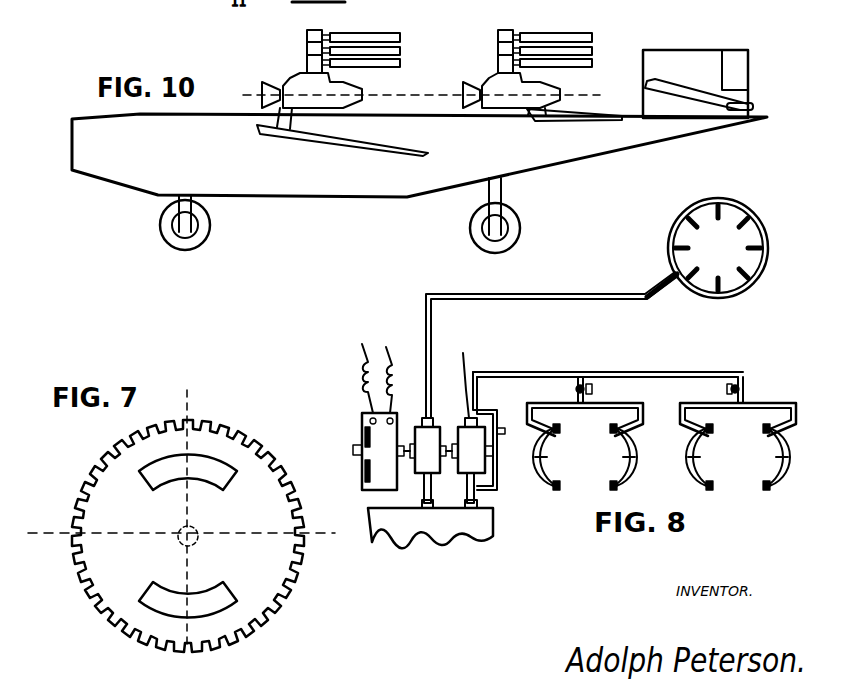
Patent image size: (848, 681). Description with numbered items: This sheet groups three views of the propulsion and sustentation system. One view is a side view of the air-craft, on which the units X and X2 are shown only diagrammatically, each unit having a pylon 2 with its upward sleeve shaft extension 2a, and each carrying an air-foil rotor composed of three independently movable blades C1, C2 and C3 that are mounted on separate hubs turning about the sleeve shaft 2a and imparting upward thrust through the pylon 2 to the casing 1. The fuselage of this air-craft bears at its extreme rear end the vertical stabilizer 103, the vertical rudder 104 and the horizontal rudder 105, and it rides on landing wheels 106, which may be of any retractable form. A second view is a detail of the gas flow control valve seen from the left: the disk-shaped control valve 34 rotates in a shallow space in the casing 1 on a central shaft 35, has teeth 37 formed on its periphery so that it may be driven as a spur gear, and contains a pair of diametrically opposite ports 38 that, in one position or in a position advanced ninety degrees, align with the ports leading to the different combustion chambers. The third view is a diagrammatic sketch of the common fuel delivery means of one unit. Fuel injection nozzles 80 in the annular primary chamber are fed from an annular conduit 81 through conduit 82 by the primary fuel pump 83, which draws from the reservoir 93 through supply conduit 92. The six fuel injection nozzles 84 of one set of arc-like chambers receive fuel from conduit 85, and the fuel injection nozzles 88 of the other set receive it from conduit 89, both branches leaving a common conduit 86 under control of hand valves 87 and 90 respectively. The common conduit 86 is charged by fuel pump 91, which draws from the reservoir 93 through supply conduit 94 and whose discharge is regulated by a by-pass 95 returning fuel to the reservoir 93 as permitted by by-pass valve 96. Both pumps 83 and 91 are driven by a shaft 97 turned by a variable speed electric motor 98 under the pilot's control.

In FIG. 7, the casing 1 is at (190, 388).
In FIG. 10, the pylon 2 is at (235, 92).
In FIG. 7, the pylon 2 is at (33, 526).
In FIG. 10, the sleeve shaft 2a is at (521, 94).
In FIG. 10, the propulsion and sustentation unit X is at (297, 73).
In FIG. 10, the propulsion and sustentation unit X2 is at (487, 78).
In FIG. 10, the blade C1 is at (400, 35).
In FIG. 10, the blade C2 is at (400, 50).
In FIG. 10, the blade C3 is at (400, 62).
In FIG. 7, the control valve 34 is at (110, 490).
In FIG. 7, the shaft 35 is at (196, 541).
In FIG. 7, the teeth 37 is at (75, 558).
In FIG. 7, the ports 38 is at (188, 535).
In FIG. 8, the fuel injection nozzles 80 is at (716, 221).
In FIG. 8, the annular conduit 81 is at (768, 231).
In FIG. 8, the conduit 82 is at (541, 300).
In FIG. 8, the primary fuel pump 83 is at (428, 443).
In FIG. 8, the fuel injection nozzles 84 is at (763, 436).
In FIG. 8, the conduit 85 is at (752, 405).
In FIG. 8, the common conduit 86 is at (660, 372).
In FIG. 8, the hand valve 87 is at (725, 389).
In FIG. 8, the fuel injection nozzles 88 is at (610, 436).
In FIG. 8, the conduit 89 is at (608, 405).
In FIG. 8, the hand valve 90 is at (575, 389).
In FIG. 8, the fuel pump 91 is at (471, 405).
In FIG. 8, the supply conduit 92 is at (424, 497).
In FIG. 8, the reservoir 93 is at (430, 528).
In FIG. 8, the supply conduit 94 is at (467, 495).
In FIG. 8, the by-pass 95 is at (498, 491).
In FIG. 8, the by-pass valve 96 is at (505, 431).
In FIG. 8, the shaft 97 is at (353, 450).
In FIG. 8, the electric motor 98 is at (375, 451).
In FIG. 10, the vertical stabilizer 103 is at (668, 86).
In FIG. 10, the vertical rudder 104 is at (742, 72).
In FIG. 10, the horizontal rudder 105 is at (752, 108).
In FIG. 10, the landing wheels 106 is at (163, 233).